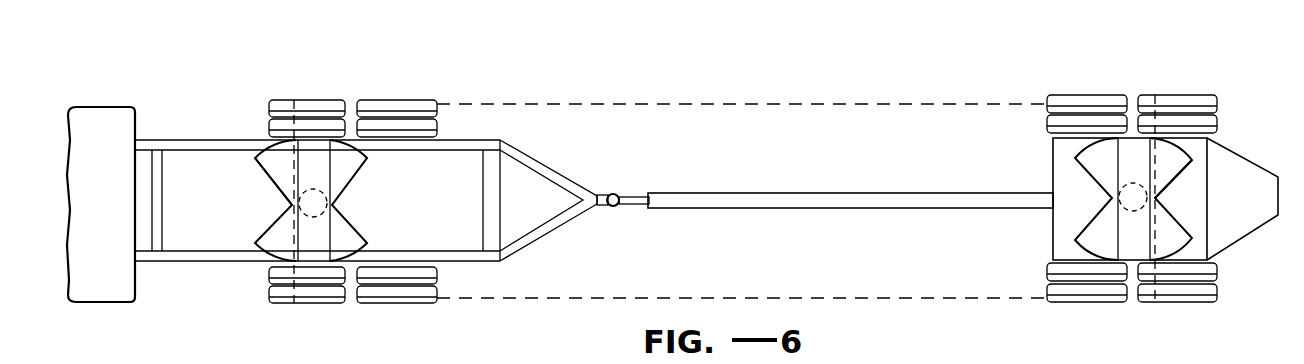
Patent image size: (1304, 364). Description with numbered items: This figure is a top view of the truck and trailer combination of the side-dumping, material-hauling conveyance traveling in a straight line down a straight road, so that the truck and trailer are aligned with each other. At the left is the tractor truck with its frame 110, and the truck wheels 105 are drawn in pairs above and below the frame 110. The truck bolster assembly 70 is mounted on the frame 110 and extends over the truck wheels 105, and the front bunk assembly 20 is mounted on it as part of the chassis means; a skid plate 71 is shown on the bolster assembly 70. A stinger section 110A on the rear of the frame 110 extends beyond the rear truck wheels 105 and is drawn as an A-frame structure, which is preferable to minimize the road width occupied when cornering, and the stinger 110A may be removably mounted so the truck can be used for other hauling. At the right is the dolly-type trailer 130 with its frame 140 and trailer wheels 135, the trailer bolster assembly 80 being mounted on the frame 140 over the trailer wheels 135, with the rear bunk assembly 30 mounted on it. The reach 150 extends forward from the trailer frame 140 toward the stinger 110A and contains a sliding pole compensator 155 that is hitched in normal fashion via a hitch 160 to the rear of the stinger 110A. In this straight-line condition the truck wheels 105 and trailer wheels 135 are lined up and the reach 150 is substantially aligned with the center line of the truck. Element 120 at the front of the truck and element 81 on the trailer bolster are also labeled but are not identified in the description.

The tractor / towing vehicle 120 is at (130, 107).
The truck frame 110 is at (450, 150).
The stinger section 110A is at (542, 170).
The truck wheels 105 is at (373, 112).
The truck bolster assembly 70 is at (289, 205).
The skid plate 71 is at (277, 165).
The front bunk assembly 20 is at (327, 229).
The hitch 160 is at (612, 193).
The sliding pole compensator 155 is at (642, 197).
The reach 150 is at (878, 193).
The dolly-type trailer 130 is at (1050, 160).
The trailer frame 140 is at (1060, 223).
The trailer wheels 135 is at (1165, 107).
The trailer bolster assembly 80 is at (1097, 195).
The cam arm 81 is at (1178, 160).
The rear bunk assembly 30 is at (1141, 222).